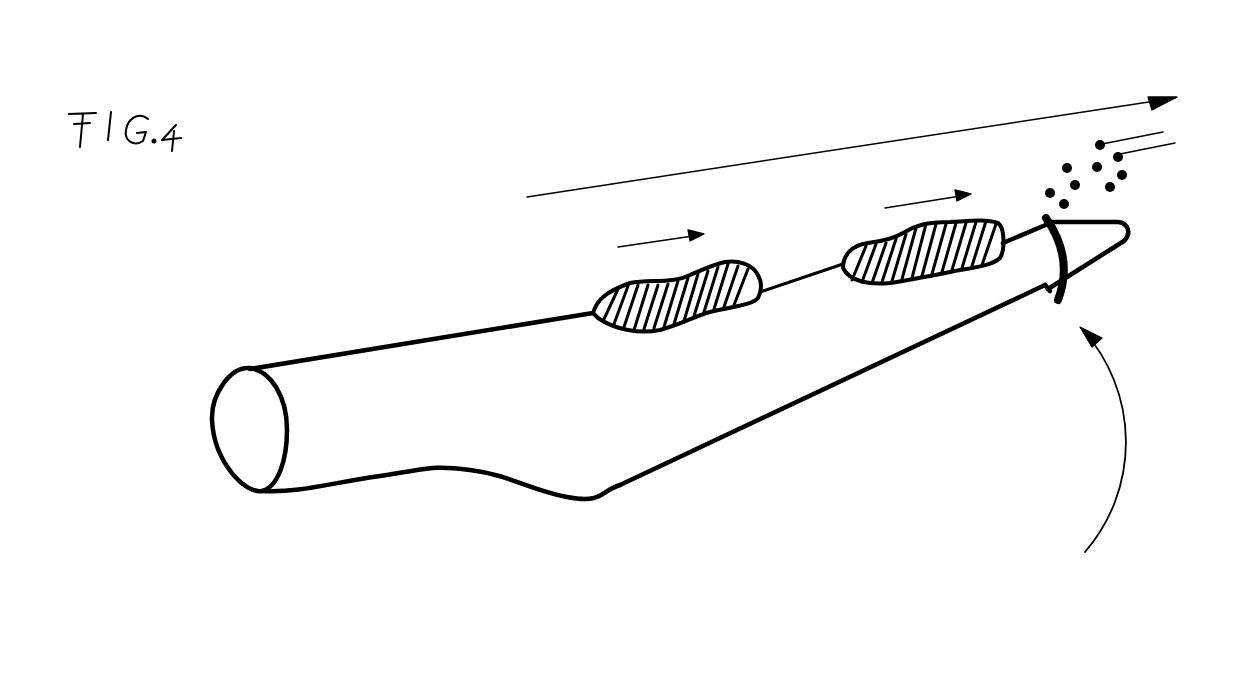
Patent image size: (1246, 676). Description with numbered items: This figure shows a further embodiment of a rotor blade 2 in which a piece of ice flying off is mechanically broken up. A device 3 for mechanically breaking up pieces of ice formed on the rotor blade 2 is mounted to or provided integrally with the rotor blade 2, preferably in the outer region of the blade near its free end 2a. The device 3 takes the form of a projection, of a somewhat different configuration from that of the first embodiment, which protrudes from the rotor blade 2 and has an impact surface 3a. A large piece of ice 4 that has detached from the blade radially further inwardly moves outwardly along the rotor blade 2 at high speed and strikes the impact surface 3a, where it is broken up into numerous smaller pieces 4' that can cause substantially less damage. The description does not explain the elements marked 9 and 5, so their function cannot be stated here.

The rotor blade 2 is at (743, 393).
The free end 2a is at (1128, 240).
The device for mechanically breaking up pieces of ice 3 is at (1102, 215).
The impact surface 3a is at (1050, 291).
The piece of ice 4 is at (690, 275).
The smaller pieces 4' is at (871, 130).
The second coil 9 is at (970, 223).
The rotation arc 5 is at (1123, 455).